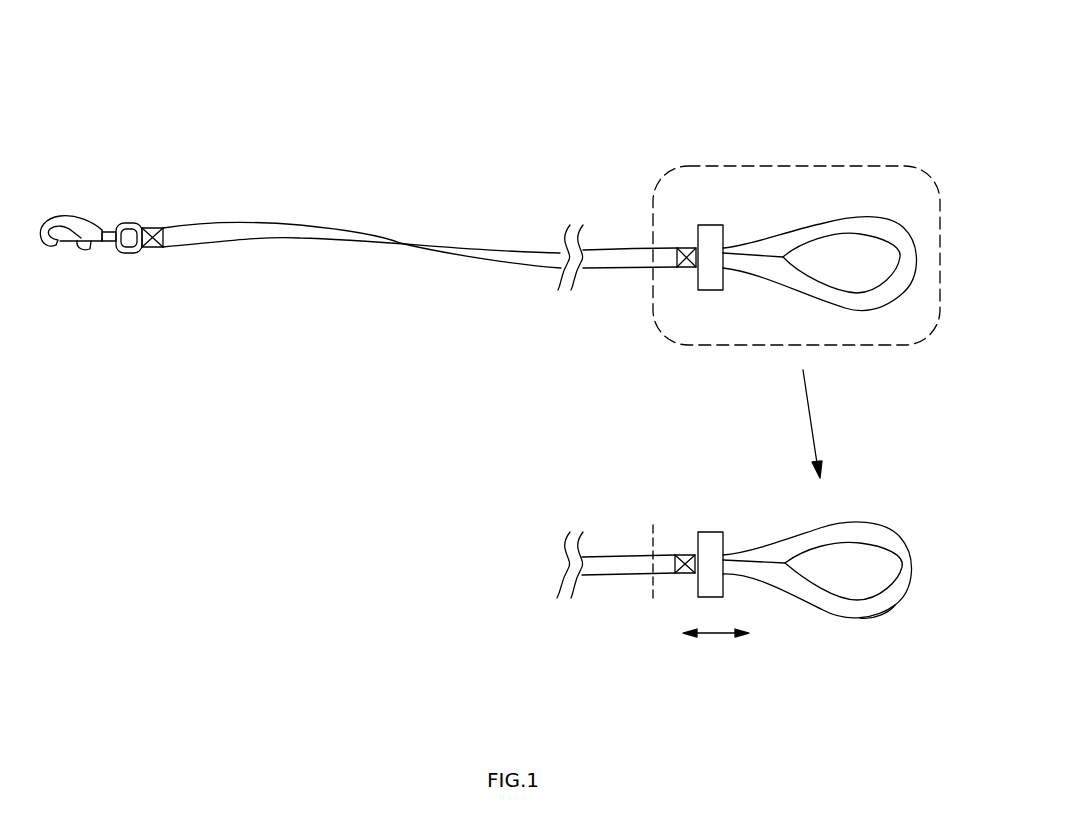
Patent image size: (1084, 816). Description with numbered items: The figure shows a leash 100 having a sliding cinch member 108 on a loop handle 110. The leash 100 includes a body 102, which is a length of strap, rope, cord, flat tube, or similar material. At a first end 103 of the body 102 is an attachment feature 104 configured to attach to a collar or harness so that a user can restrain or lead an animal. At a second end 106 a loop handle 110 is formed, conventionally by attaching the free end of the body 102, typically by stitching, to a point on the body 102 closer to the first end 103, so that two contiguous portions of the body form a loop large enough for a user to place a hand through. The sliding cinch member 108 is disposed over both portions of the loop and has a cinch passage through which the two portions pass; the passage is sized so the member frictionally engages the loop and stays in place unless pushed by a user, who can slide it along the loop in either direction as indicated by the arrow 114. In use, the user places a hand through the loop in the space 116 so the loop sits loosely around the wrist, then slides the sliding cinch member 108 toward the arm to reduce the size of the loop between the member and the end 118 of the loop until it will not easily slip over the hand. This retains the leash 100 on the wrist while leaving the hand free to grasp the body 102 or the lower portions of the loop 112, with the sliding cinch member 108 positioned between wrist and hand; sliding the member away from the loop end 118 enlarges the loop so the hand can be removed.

The leash 100 is at (839, 41).
The body 102 is at (300, 225).
The first end 103 is at (153, 252).
The attachment feature 104 is at (127, 222).
The second end 106 is at (672, 175).
The sliding cinch member 108 is at (708, 224).
The loop handle 110 is at (868, 215).
The lower portions of the loop 112 is at (687, 553).
The arrow 114 is at (713, 633).
The space 116 is at (836, 580).
The end of the loop 118 is at (905, 596).